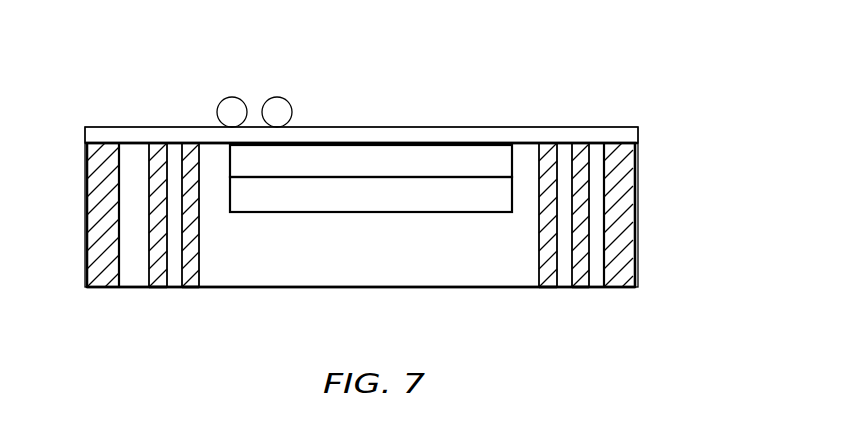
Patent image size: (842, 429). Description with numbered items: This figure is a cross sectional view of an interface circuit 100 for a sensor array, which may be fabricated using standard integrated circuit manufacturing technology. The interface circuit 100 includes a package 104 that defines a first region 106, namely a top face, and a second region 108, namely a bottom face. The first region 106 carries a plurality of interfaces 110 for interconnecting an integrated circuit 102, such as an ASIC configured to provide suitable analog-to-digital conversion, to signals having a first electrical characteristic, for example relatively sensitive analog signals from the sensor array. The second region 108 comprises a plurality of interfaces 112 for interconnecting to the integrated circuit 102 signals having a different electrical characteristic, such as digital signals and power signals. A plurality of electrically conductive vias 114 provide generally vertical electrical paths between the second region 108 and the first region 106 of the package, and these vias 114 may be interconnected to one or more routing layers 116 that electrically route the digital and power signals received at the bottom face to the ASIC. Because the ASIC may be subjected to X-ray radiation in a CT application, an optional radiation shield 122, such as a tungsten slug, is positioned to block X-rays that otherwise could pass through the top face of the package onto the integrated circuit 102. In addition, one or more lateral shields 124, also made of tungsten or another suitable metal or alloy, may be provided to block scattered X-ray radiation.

The interface circuit 100 is at (198, 71).
The integrated circuit 102 is at (420, 213).
The package 104 is at (651, 226).
The first region 106 is at (500, 128).
The second region 108 is at (358, 288).
The interfaces 110 is at (234, 98).
The interfaces 112 is at (160, 287).
The electrically conductive vias 114 is at (188, 146).
The routing layers 116 is at (422, 143).
The radiation shield 122 is at (316, 146).
The lateral shields 124 is at (103, 190).